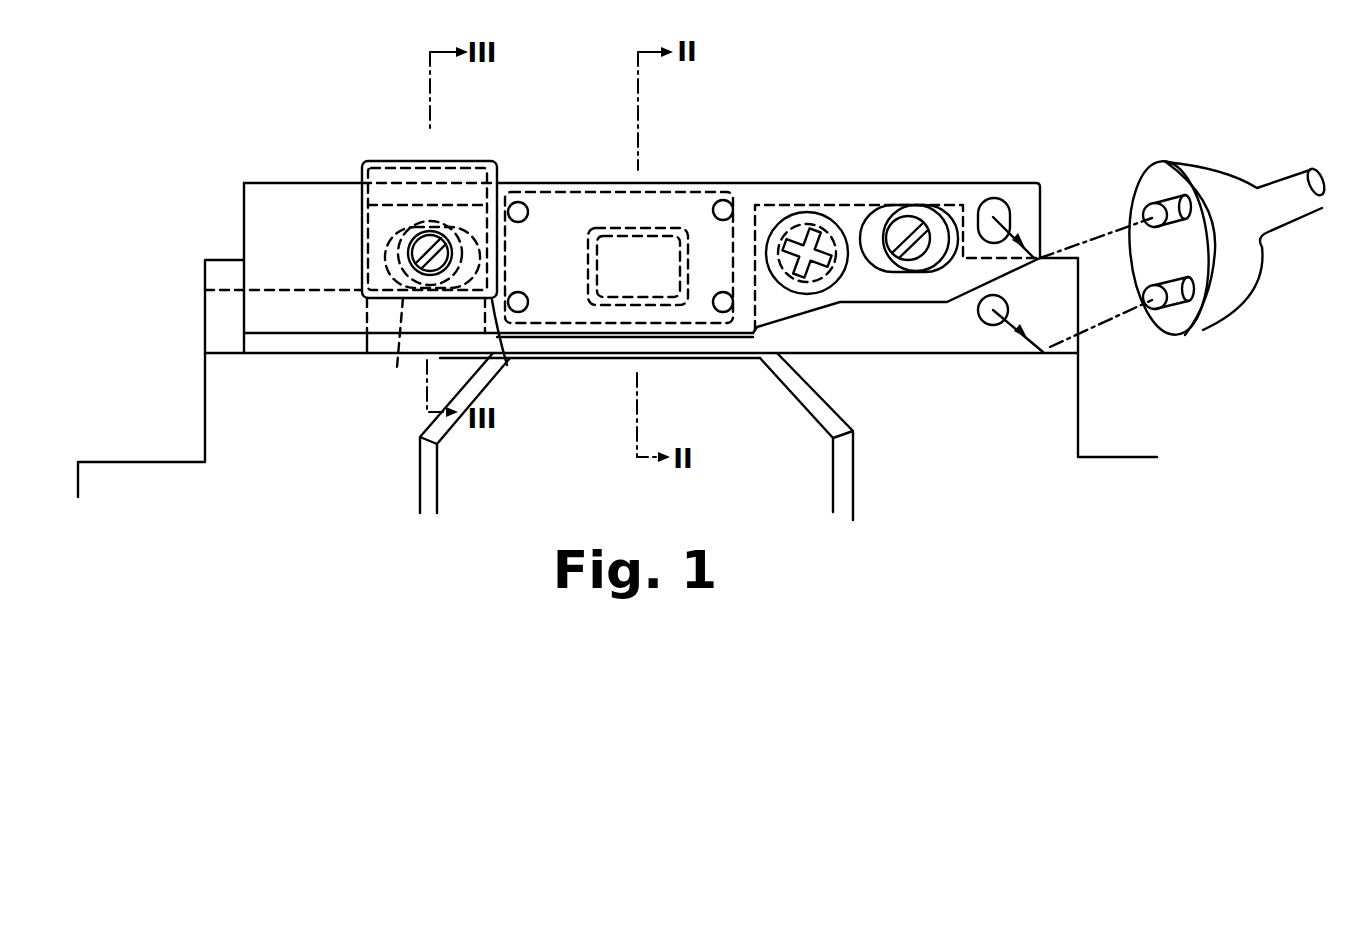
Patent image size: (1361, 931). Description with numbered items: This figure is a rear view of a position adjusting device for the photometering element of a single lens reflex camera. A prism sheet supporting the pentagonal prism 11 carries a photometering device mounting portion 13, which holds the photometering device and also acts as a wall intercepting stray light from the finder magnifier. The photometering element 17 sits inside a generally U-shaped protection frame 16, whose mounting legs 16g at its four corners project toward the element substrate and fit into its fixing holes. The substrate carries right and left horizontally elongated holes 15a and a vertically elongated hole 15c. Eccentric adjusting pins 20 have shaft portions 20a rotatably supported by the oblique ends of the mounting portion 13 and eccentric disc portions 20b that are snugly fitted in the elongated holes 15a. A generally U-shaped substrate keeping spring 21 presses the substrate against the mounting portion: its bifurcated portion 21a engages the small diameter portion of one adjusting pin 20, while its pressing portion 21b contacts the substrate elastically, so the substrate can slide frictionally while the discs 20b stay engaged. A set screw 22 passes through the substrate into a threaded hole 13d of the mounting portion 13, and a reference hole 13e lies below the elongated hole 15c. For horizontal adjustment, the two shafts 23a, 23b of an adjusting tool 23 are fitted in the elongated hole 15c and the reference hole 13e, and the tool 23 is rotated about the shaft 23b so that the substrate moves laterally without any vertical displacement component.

The pentagonal prism 11 is at (813, 488).
The photometering device mounting portion 13 is at (385, 217).
The threaded hole 13d is at (827, 207).
The reference hole 13e is at (995, 312).
The elongated holes 15a is at (883, 268).
The vertically elongated hole 15c is at (1012, 225).
The protection frame 16 is at (700, 303).
The mounting legs 16g is at (723, 200).
The photometering element 17 is at (658, 237).
The eccentric adjusting pins 20 is at (527, 101).
The shaft portions 20a is at (430, 240).
The eccentric disc portions 20b is at (470, 215).
The substrate keeping spring 21 is at (473, 173).
The bifurcated portion 21a is at (393, 352).
The pressing portion 21b is at (525, 353).
The set screw 22 is at (795, 215).
The adjusting tool 23 is at (1235, 277).
The shaft 23a is at (1180, 203).
The shaft 23b is at (1180, 300).